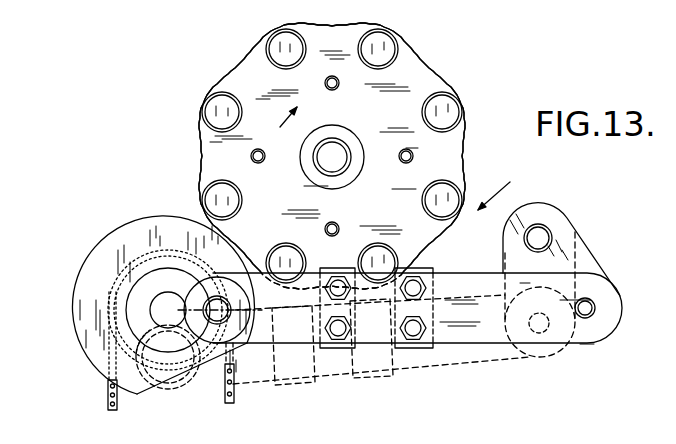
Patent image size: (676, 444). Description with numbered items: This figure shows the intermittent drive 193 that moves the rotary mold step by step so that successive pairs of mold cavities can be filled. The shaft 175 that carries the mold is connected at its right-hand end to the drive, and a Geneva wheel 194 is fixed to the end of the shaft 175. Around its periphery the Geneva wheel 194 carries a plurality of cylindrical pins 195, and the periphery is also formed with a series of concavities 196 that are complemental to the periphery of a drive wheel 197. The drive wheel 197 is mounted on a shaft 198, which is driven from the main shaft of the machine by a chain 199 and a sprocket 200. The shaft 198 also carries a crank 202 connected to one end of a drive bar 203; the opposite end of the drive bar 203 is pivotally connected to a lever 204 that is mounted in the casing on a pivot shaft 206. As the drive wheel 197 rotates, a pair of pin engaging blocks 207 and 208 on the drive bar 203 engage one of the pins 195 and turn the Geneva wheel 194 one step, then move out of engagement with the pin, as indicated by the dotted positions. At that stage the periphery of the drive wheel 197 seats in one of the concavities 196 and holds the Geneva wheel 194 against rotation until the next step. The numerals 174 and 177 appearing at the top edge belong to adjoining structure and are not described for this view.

The reference numeral (adjacent figure) 174 is at (152, 4).
The reference numeral (adjacent figure) 177 is at (577, 12).
The shaft 175 is at (343, 147).
The intermittent drive 193 is at (508, 184).
The Geneva wheel 194 is at (247, 85).
The cylindrical pins 195 is at (279, 38).
The concavities 196 is at (425, 68).
The drive wheel 197 is at (93, 259).
The shaft 198 is at (168, 293).
The chain 199 is at (110, 398).
The sprocket 200 is at (112, 372).
The crank 202 is at (217, 298).
The drive bar 203 is at (480, 283).
The lever 204 is at (588, 257).
The pivot shaft 206 is at (545, 230).
The pin engaging block 207 is at (336, 270).
The pin engaging block 208 is at (421, 270).